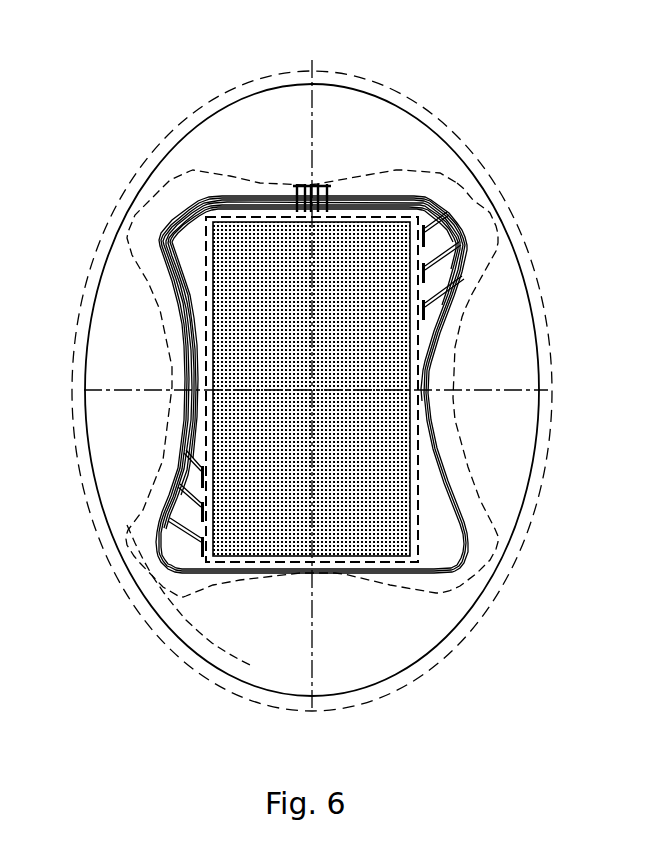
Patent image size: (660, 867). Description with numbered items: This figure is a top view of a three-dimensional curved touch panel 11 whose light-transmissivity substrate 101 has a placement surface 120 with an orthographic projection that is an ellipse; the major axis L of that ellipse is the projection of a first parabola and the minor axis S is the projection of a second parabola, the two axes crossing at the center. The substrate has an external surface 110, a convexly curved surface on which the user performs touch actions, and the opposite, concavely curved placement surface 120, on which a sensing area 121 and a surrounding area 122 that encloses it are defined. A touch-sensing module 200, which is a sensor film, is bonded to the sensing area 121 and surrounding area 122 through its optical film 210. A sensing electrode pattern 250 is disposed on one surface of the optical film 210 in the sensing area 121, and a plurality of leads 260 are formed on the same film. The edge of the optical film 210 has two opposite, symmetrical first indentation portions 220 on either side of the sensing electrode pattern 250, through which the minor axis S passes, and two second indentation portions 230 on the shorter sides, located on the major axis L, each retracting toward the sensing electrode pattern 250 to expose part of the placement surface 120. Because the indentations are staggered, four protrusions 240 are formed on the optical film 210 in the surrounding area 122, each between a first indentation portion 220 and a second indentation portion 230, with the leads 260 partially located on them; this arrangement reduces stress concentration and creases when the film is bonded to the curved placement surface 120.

The three-dimensional curved touch panel 11 is at (652, 100).
The light-transmissivity substrate 101 is at (462, 737).
The external surface 110 is at (442, 622).
The placement surface 120 is at (388, 676).
The sensing area 121 is at (158, 220).
The surrounding area 122 is at (208, 213).
The touch-sensing module 200 is at (258, 737).
The optical film 210 is at (237, 580).
The first indentation portion 220 is at (118, 438).
The second indentation portion 230 is at (228, 166).
The protrusion 240 is at (485, 230).
The sensing electrode pattern 250 is at (212, 571).
The lead 260 is at (203, 530).
The major axis L is at (312, 80).
The minor axis S is at (517, 389).